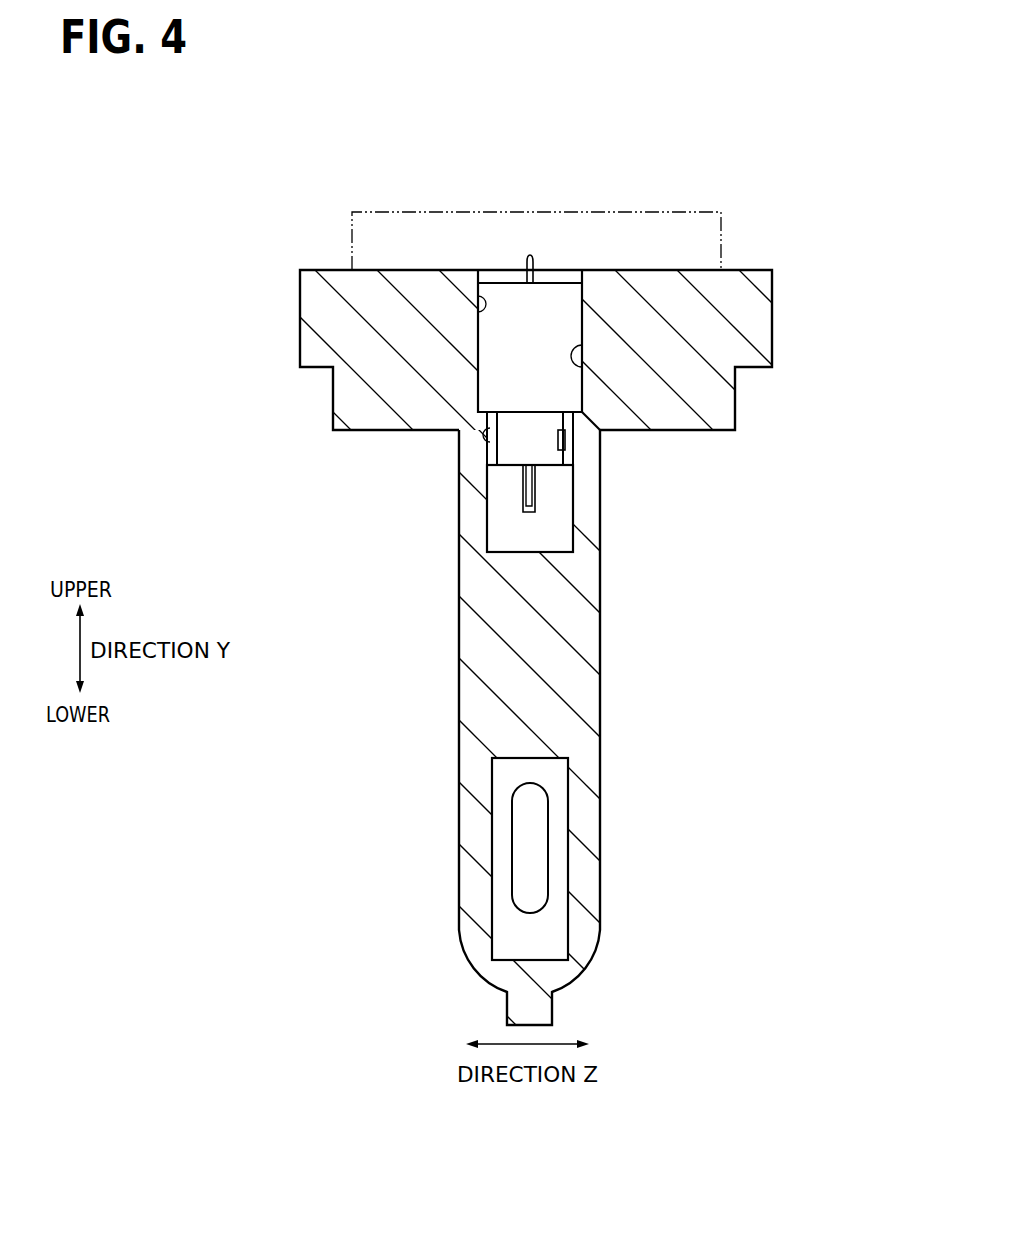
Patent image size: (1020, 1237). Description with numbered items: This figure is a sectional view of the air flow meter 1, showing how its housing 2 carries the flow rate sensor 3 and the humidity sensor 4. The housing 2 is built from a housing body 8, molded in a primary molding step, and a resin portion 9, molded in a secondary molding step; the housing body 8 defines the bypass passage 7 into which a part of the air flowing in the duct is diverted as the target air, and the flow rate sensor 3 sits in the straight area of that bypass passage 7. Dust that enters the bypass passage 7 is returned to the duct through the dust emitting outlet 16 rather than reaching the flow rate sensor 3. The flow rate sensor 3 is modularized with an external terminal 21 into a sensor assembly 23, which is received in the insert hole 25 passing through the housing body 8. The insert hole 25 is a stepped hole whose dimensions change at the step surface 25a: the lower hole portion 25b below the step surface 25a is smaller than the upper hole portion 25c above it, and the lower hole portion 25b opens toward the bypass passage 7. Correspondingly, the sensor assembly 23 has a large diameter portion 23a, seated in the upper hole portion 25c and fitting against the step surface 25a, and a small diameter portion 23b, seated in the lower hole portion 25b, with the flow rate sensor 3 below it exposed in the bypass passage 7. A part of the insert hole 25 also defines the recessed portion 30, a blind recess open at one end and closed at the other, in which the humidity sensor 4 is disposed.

The air flow meter 1 is at (784, 192).
The housing 2 is at (778, 269).
The flow rate sensor 3 is at (522, 495).
The humidity sensor 4 is at (568, 438).
The bypass passage 7 is at (548, 525).
The housing body 8 is at (466, 711).
The resin portion 9 is at (712, 212).
The dust emitting outlet 16 is at (530, 846).
The external terminal 21 is at (533, 262).
The sensor assembly 23 is at (590, 284).
The large diameter portion 23a is at (485, 347).
The small diameter portion 23b is at (505, 453).
The insert hole 25 is at (580, 343).
The step surface 25a is at (480, 410).
The lower hole portion 25b is at (470, 430).
The upper hole portion 25c is at (477, 300).
The recessed portion 30 is at (568, 455).